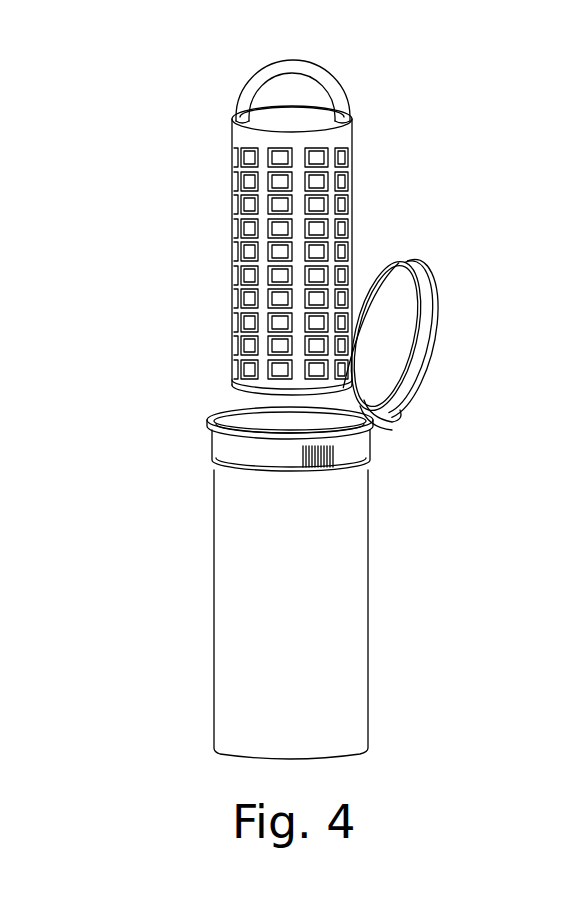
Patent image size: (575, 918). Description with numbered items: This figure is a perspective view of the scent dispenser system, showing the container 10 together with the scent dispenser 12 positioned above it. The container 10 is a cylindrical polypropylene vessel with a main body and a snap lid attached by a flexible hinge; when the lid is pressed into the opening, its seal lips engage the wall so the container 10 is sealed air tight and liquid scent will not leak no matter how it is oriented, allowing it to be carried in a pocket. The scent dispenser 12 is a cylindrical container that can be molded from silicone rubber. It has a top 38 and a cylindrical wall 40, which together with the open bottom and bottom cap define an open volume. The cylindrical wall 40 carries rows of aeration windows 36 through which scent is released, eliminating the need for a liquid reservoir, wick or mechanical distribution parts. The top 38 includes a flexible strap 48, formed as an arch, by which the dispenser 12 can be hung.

The container 10 is at (416, 579).
The scent dispenser 12 is at (176, 257).
The aeration windows 36 is at (340, 160).
The top 38 is at (268, 120).
The cylindrical wall 40 is at (232, 135).
The flexible strap 48 is at (322, 72).